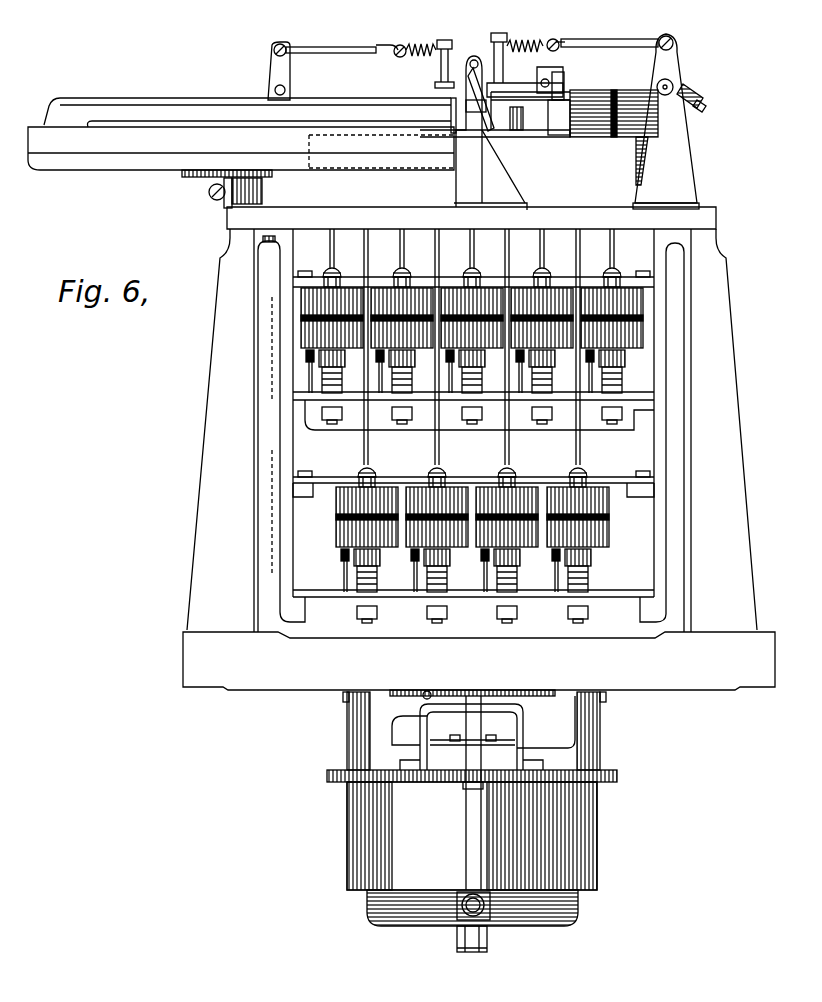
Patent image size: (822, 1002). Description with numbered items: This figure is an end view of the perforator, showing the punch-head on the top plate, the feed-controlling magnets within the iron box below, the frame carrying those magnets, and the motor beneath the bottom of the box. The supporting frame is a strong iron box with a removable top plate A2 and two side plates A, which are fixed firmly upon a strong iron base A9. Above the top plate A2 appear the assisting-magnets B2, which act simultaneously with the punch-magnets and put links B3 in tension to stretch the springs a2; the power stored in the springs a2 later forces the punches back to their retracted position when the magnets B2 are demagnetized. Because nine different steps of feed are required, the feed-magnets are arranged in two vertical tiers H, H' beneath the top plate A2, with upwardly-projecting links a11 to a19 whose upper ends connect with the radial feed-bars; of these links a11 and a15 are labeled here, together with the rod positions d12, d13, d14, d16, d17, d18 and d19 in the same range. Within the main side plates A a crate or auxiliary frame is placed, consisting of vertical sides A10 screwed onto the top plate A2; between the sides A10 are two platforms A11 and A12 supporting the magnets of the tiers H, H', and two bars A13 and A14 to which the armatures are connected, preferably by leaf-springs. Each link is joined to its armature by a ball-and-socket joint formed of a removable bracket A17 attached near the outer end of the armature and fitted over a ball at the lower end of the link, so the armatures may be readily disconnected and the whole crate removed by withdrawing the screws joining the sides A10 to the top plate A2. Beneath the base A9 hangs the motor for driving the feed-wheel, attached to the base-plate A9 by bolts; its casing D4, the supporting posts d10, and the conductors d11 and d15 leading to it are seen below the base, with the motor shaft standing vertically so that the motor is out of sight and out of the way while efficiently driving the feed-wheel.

The link B3 is at (357, 31).
The spring a2 is at (427, 46).
The assisting-magnet B2 is at (626, 100).
The top plate A2 is at (700, 220).
The side plate A is at (479, 459).
The vertical side A10 is at (659, 360).
The bar A14 is at (293, 281).
The feed-magnet tier H is at (467, 356).
The platform A11 is at (428, 402).
The bar A13 is at (468, 482).
The removable bracket A17 is at (577, 466).
The feed-magnet tier H' is at (472, 555).
The platform A12 is at (633, 580).
The link a11 is at (330, 247).
The rod / spindle d12 is at (364, 247).
The contact rod d13 is at (400, 247).
The rod d14 is at (435, 247).
The link a15 is at (470, 247).
The rod d16 is at (505, 247).
The rod / bearing d17 is at (540, 247).
The rod d18 is at (576, 247).
The contact rod d19 is at (610, 247).
The support post d10 is at (357, 736).
The motor casing D4 is at (472, 848).
The base A9 is at (469, 770).
The wire bracket d11 is at (420, 720).
The conductor d15 is at (567, 714).